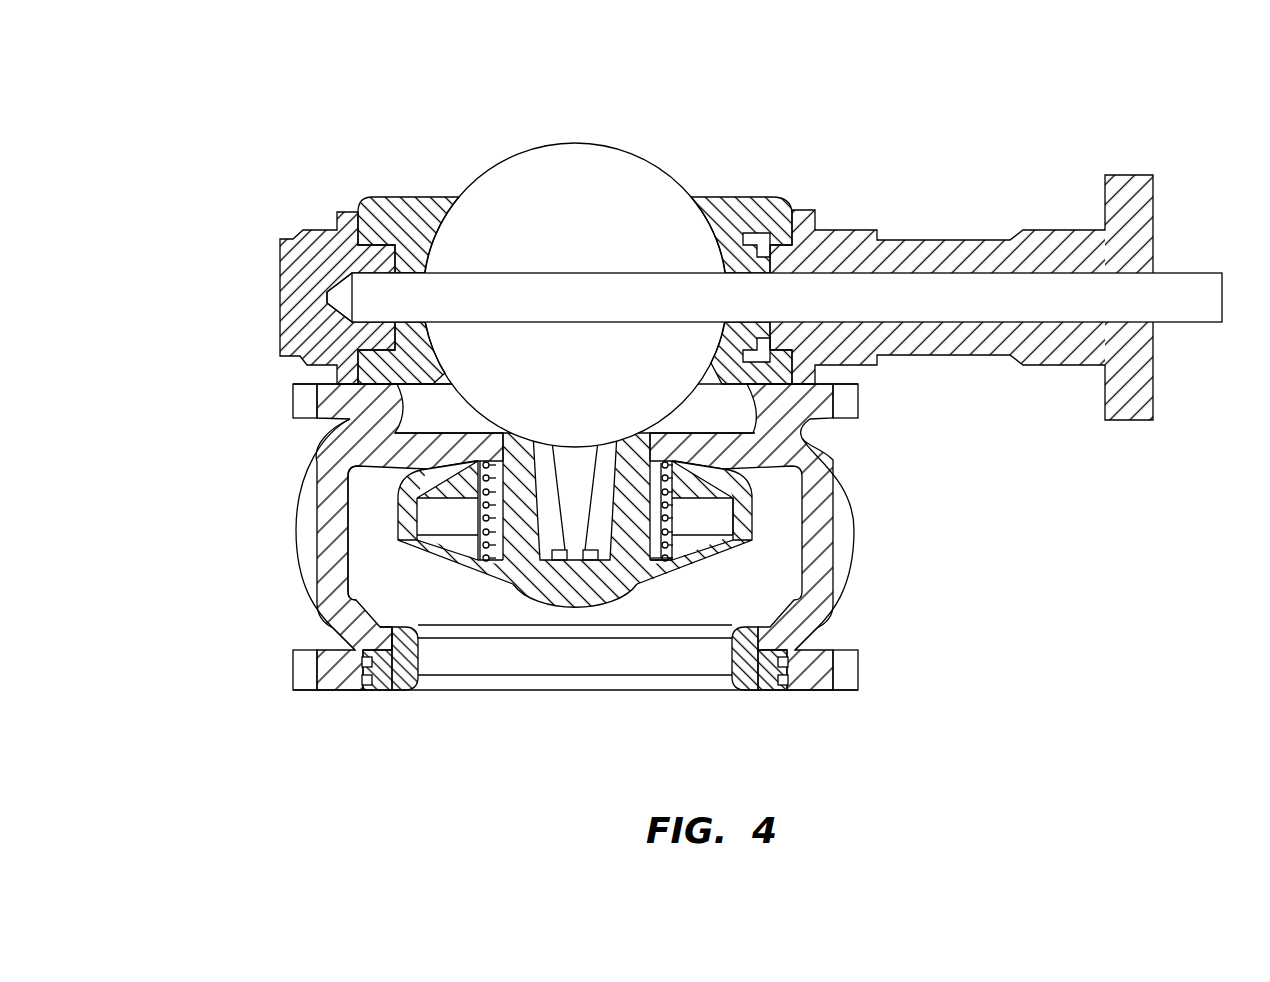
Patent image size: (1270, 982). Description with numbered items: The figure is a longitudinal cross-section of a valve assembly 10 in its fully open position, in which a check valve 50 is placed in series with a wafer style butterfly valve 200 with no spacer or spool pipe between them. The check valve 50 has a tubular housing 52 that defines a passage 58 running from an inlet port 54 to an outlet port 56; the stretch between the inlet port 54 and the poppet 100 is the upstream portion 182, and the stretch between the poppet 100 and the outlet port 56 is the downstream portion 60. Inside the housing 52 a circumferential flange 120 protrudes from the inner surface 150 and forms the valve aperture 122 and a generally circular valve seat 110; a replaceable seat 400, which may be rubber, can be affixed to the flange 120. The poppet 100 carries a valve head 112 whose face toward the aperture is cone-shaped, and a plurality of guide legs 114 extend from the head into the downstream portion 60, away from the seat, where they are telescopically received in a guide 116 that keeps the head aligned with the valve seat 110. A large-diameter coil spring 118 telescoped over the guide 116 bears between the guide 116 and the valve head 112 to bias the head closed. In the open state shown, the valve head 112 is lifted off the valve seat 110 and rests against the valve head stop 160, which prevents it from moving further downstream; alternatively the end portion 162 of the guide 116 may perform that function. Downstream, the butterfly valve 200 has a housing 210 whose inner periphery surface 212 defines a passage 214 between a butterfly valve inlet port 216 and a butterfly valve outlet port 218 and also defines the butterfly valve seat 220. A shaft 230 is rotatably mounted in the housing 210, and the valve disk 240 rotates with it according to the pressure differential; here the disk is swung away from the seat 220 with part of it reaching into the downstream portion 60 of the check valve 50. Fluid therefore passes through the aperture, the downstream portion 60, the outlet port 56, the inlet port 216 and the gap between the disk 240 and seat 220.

The valve assembly 10 is at (980, 107).
The check valve 50 is at (902, 534).
The check valve tubular casing or housing 52 is at (328, 537).
The inlet port 54 is at (490, 687).
The outlet port 56 is at (337, 398).
The passage 58 is at (783, 568).
The downstream portion 60 is at (440, 417).
The poppet 100 is at (414, 567).
The valve seat 110 is at (745, 630).
The valve head 112 is at (580, 595).
The guide legs 114 is at (545, 552).
The guide 116 is at (653, 517).
The coil spring 118 is at (668, 551).
The circumferential flange 120 is at (380, 637).
The valve aperture 122 is at (652, 655).
The inner surface 150 is at (350, 492).
The valve head stop 160 is at (745, 514).
The end portion 162 is at (745, 538).
The upstream portion 182 is at (453, 608).
The wafer style butterfly valve 200 is at (260, 297).
The butterfly valve housing 210 is at (315, 235).
The inner periphery surface 212 is at (725, 212).
The passage 214 is at (437, 376).
The butterfly valve inlet port 216 is at (437, 385).
The butterfly valve outlet port 218 is at (438, 195).
The butterfly valve seat 220 is at (428, 268).
The shaft 230 is at (1188, 281).
The valve disk 240 is at (574, 152).
The replaceable seat 400 is at (392, 673).